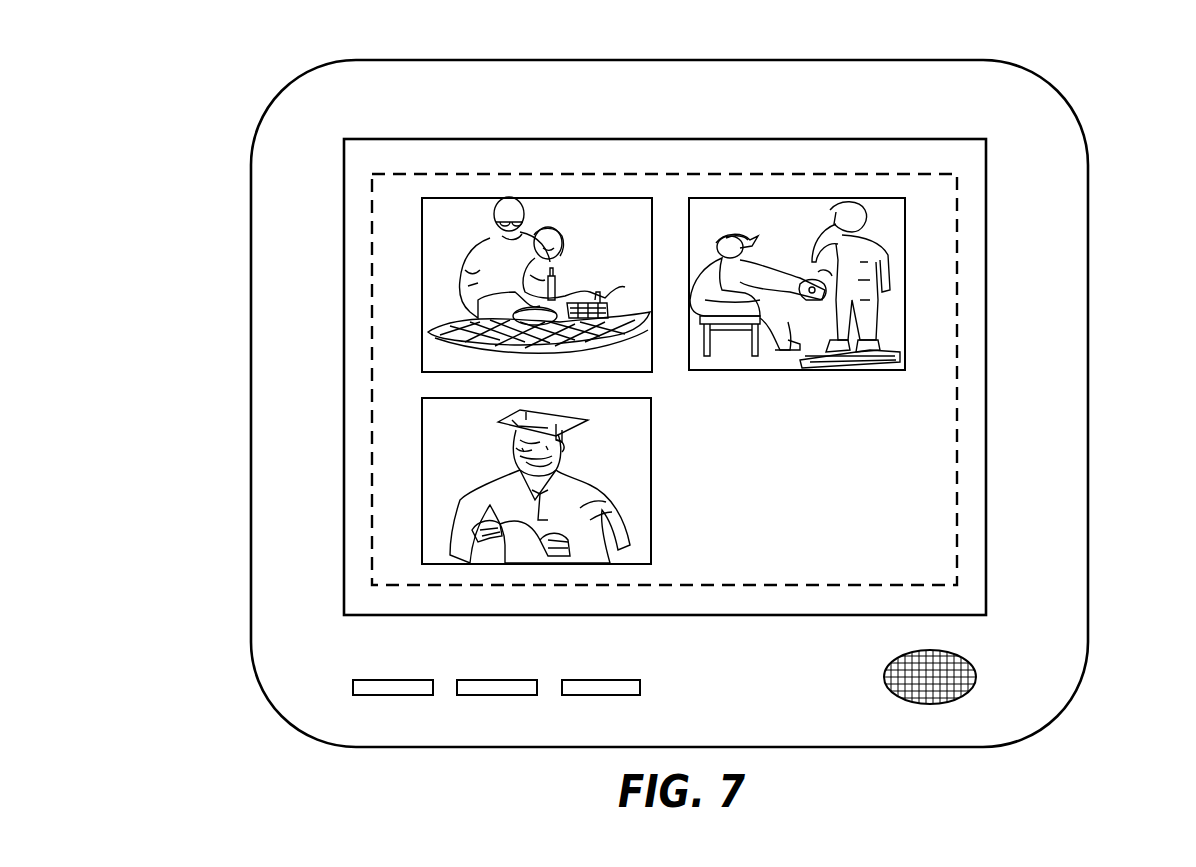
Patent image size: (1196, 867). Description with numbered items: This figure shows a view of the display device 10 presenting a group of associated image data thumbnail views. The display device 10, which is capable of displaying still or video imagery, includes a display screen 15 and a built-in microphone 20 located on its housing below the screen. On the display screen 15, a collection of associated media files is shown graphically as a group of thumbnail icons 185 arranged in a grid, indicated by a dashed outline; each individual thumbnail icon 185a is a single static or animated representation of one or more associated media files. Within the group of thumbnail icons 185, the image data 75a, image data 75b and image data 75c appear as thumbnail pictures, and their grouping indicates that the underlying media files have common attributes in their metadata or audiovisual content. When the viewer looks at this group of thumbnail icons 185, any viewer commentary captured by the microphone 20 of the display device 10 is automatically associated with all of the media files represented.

The display device 10 is at (1088, 492).
The display screen 15 is at (986, 315).
The built-in microphone 20 is at (884, 665).
The group of thumbnail icons 185 is at (674, 174).
The thumbnail icon 185a is at (562, 198).
The image data 75a is at (460, 282).
The image data B 75b is at (483, 493).
The image data 75c is at (727, 237).